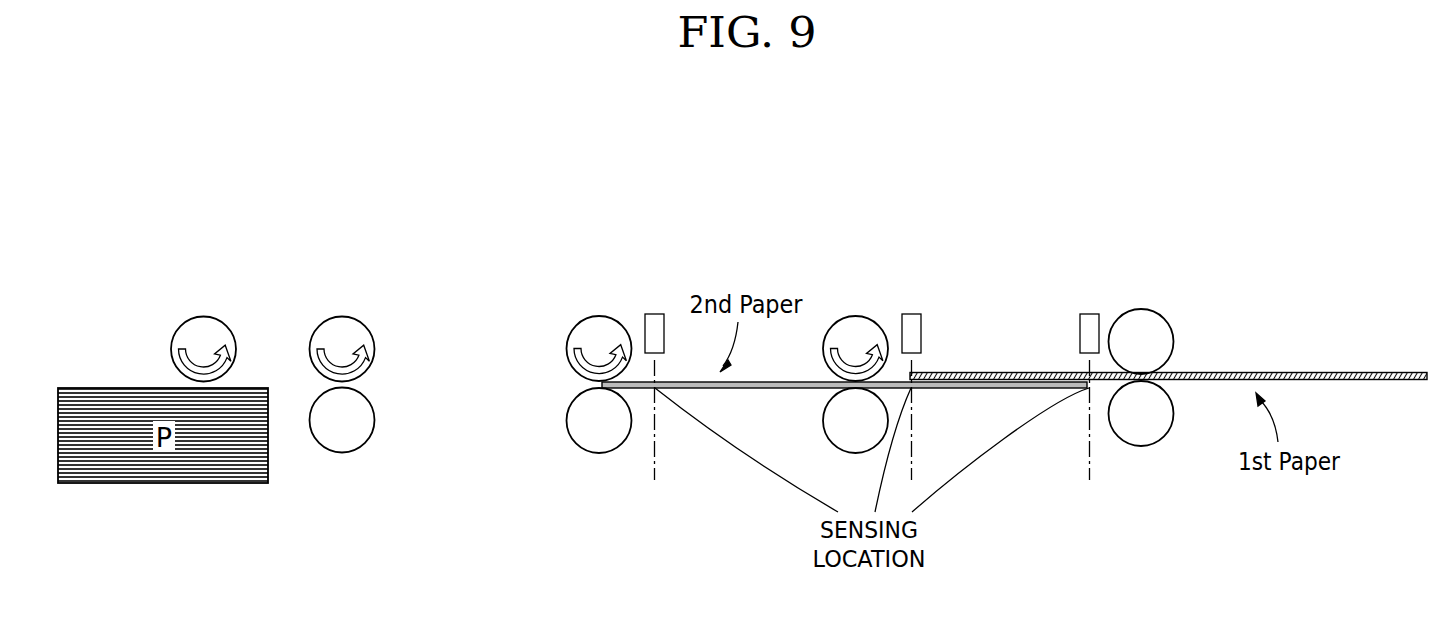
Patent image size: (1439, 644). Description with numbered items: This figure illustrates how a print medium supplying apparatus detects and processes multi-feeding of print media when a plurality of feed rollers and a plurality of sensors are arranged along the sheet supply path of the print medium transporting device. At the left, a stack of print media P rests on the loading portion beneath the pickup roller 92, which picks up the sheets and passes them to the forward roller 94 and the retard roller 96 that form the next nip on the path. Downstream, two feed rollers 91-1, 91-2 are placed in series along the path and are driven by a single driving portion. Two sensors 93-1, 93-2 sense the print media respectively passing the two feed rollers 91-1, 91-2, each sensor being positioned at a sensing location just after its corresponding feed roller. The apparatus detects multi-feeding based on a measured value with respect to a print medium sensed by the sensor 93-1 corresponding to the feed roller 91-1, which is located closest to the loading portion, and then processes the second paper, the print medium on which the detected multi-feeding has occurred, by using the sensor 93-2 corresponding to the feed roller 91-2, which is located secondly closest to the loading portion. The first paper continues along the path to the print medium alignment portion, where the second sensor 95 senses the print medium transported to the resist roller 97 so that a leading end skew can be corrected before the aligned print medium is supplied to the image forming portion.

The pickup roller 92 is at (203, 316).
The forward roller 94 is at (342, 315).
The retard roller 96 is at (342, 455).
The feed roller 91-1 is at (600, 316).
The sensor 93-1 is at (655, 313).
The feed roller 91-2 is at (857, 316).
The sensor 93-2 is at (915, 313).
The second sensor 95 is at (1089, 313).
The resist roller 97 is at (1140, 308).